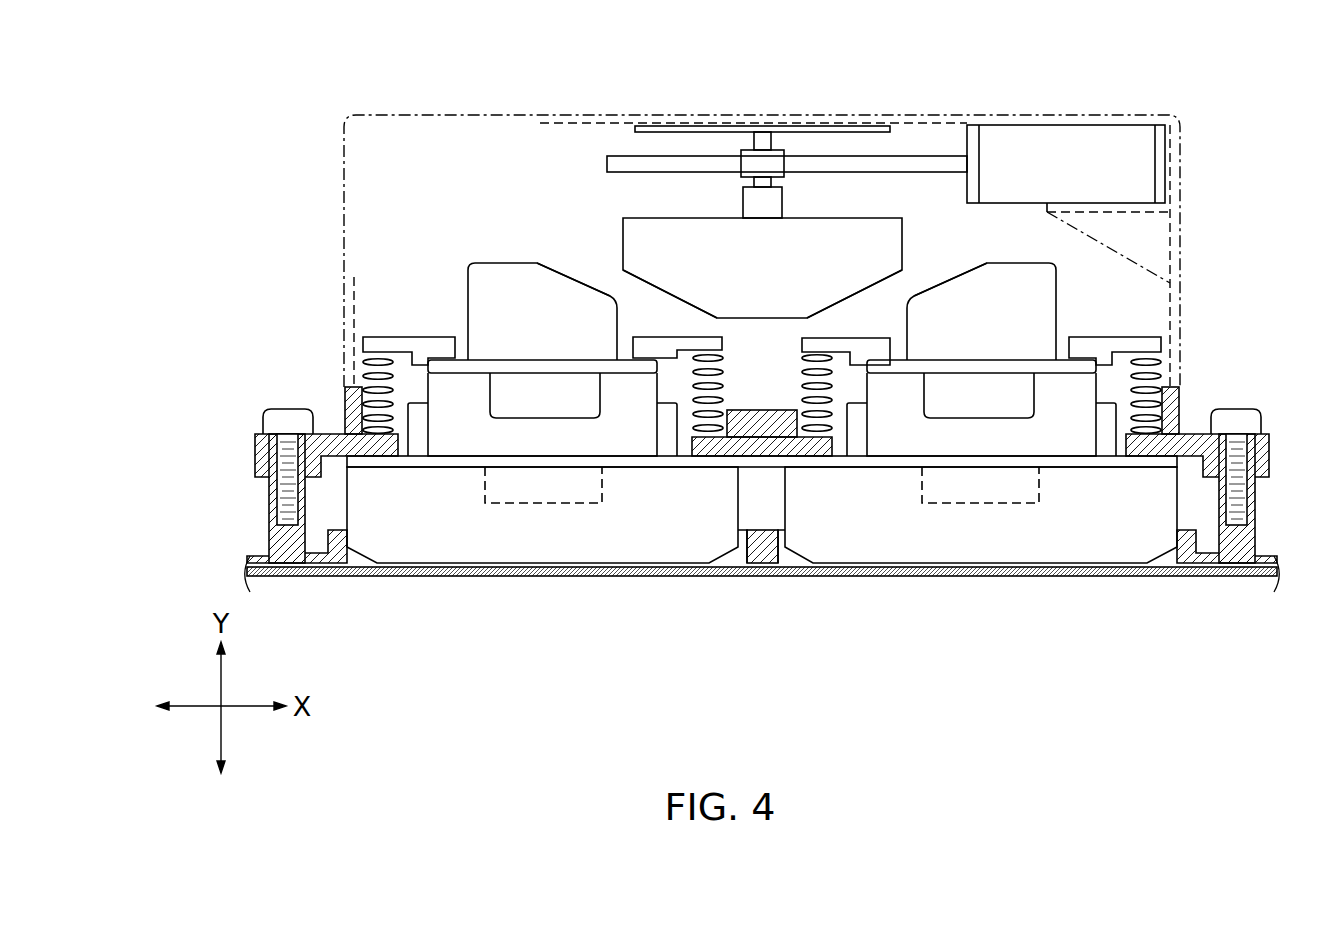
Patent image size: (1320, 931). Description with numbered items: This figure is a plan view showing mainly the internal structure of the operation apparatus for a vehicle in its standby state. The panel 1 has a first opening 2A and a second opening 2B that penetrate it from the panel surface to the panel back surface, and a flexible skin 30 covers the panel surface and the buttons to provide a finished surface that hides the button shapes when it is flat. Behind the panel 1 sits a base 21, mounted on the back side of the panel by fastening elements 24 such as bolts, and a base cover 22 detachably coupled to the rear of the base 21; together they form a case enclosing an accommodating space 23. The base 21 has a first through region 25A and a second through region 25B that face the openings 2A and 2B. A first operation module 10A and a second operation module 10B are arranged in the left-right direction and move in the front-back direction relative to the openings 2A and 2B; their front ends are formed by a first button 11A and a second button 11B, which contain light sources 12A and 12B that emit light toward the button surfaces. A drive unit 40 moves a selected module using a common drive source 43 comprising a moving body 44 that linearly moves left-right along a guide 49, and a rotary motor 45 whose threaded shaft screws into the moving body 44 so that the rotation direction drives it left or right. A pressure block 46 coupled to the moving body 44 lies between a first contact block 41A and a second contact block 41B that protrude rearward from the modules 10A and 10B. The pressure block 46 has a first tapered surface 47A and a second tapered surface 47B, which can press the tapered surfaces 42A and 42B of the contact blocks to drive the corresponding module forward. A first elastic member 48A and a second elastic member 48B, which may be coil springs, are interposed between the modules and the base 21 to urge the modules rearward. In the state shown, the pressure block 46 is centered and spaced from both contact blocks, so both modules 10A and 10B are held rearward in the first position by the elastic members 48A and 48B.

The panel 1 is at (283, 572).
The first opening 2A is at (342, 575).
The second opening 2B is at (787, 575).
The first operation module 10A is at (421, 582).
The second operation module 10B is at (1026, 582).
The first button 11A is at (490, 557).
The second button 11B is at (887, 557).
The light source 12A is at (573, 506).
The light source 12B is at (970, 506).
The base 21 is at (255, 453).
The base cover 22 is at (344, 172).
The accommodating space 23 is at (393, 297).
The fastening elements 24 is at (263, 420).
The first through region 25A is at (683, 445).
The second through region 25B is at (1118, 445).
The skin 30 is at (737, 570).
The drive unit 40 is at (588, 168).
The first contact block 41A is at (487, 268).
The second contact block 41B is at (1048, 300).
The tapered surface 42A is at (563, 270).
The tapered surface 42B is at (943, 282).
The drive source 43 is at (787, 164).
The moving body 44 is at (775, 160).
The rotary motor 45 is at (1046, 140).
The pressure block 46 is at (640, 232).
The first tapered surface 47A is at (667, 300).
The second tapered surface 47B is at (863, 300).
The first elastic member 48A is at (362, 354).
The second elastic member 48B is at (1162, 354).
The guide 49 is at (757, 145).